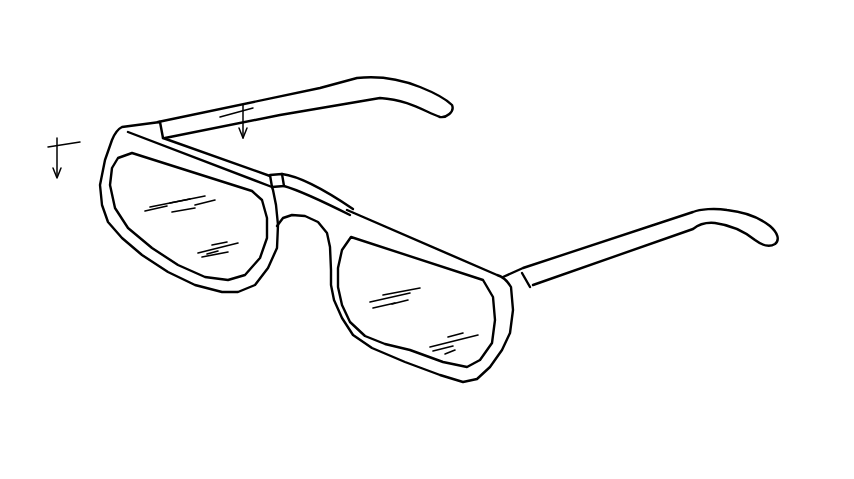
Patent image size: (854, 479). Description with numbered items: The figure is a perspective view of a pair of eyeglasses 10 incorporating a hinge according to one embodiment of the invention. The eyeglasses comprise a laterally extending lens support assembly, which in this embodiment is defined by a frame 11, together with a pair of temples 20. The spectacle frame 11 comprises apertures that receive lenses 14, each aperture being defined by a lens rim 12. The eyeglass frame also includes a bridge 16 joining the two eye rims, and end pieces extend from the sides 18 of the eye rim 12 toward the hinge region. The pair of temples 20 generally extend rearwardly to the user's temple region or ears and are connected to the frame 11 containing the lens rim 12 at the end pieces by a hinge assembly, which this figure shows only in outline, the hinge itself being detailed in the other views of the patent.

The eyeglasses 10 is at (150, 290).
The frame 11 is at (240, 286).
The lens rim 12 is at (495, 357).
The lenses 14 is at (393, 333).
The bridge 16 is at (320, 208).
The sides 18 is at (120, 147).
The temples 20 is at (298, 93).